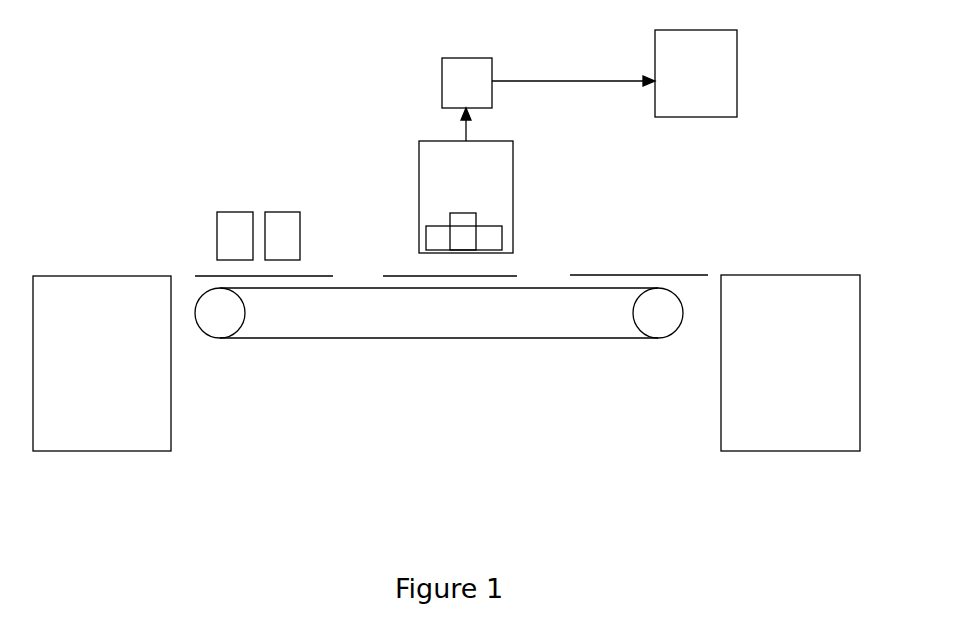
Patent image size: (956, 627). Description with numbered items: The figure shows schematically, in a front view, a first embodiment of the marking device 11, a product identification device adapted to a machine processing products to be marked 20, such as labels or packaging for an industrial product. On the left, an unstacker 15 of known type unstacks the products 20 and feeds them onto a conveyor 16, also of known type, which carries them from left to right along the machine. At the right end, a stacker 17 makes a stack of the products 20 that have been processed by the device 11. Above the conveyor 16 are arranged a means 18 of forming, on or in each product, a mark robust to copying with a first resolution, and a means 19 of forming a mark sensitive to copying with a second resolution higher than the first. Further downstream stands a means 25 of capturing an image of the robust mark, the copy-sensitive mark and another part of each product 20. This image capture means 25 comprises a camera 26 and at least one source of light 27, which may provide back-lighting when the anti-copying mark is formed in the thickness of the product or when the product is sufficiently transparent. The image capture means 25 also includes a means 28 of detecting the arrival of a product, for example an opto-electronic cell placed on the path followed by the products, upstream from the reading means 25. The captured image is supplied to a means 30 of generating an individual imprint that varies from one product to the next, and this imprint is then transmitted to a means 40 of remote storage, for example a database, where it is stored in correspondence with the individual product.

The marking device 11 is at (281, 453).
The unstacker 15 is at (152, 423).
The conveyor 16 is at (297, 325).
The stacker 17 is at (837, 424).
The means of forming a mark robust to copying 18 is at (228, 224).
The means of forming a mark sensitive to copying 19 is at (277, 224).
The product to be marked 20 is at (207, 276).
The image capture means 25 is at (429, 183).
The camera 26 is at (463, 235).
The source of light 27 is at (490, 235).
The means of detecting the arrival of a product 28 is at (444, 237).
The means of generating an individual imprint 30 is at (455, 74).
The means of remote storage 40 is at (726, 44).